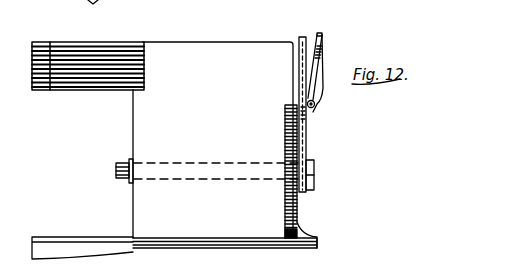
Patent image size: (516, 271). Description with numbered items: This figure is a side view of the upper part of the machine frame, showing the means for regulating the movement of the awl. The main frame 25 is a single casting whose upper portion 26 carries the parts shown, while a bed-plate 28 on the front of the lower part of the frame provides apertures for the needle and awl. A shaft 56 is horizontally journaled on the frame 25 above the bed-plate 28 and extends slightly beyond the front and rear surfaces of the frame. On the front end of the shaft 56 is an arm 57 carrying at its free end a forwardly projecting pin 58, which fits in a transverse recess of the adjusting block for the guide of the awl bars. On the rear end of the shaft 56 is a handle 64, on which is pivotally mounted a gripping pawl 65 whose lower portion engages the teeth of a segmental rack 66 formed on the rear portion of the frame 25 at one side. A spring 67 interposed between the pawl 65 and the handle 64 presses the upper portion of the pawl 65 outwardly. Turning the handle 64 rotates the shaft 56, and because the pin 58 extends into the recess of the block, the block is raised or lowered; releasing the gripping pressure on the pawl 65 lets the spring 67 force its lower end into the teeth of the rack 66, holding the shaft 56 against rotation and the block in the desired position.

The main frame 25 is at (213, 140).
The upper portion of the frame 26 is at (64, 46).
The bed-plate 28 is at (52, 241).
The shaft 56 is at (216, 160).
The arm 57 is at (129, 182).
The pin 58 is at (116, 170).
The handle 64 is at (300, 72).
The gripping pawl 65 is at (322, 93).
The segmental rack 66 is at (285, 124).
The spring 67 is at (321, 40).